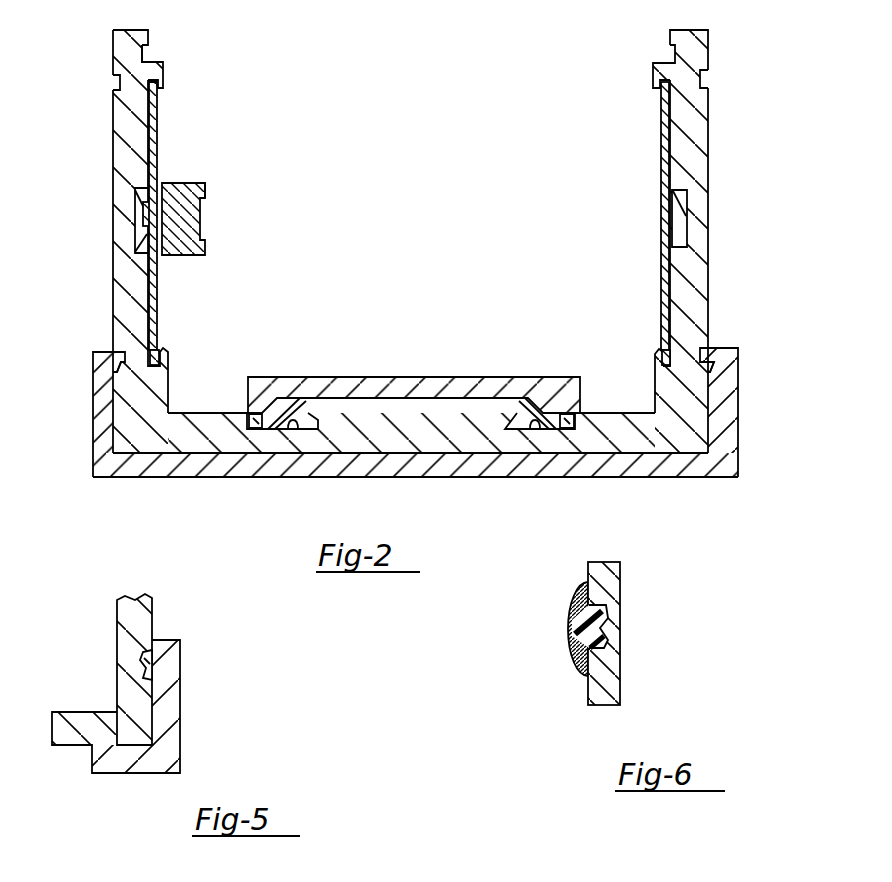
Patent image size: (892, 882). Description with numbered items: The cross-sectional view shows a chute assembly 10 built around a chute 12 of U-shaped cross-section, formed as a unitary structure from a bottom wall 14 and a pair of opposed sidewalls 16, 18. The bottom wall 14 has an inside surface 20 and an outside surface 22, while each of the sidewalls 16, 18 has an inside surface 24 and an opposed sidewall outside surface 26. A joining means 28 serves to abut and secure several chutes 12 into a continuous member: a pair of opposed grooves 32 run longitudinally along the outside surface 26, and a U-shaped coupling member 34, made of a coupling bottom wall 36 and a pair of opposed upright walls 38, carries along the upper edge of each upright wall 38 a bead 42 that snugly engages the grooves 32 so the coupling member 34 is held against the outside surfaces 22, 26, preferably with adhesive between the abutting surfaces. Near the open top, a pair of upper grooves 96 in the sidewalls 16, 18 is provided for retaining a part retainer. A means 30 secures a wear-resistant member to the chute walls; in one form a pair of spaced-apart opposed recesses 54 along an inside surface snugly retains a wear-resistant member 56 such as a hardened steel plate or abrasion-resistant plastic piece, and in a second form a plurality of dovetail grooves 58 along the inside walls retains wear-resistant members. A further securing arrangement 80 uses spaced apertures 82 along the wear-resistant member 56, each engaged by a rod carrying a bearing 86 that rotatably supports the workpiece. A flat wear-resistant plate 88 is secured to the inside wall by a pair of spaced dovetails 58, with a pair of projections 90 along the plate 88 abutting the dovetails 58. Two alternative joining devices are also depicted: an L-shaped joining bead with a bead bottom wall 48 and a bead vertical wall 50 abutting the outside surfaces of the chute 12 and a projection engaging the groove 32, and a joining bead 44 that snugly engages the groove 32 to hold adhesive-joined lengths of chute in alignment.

In FIG. 2, the chute assembly 10 is at (516, 112).
In FIG. 2, the chute 12 is at (730, 330).
In FIG. 5, the chute 12 is at (153, 616).
In FIG. 6, the chute 12 is at (622, 598).
In FIG. 2, the bottom wall 14 is at (598, 411).
In FIG. 2, the sidewall 16 is at (708, 48).
In FIG. 2, the sidewall 18 is at (707, 154).
In FIG. 2, the inside surface 20 is at (373, 405).
In FIG. 2, the outside surface 22 is at (478, 455).
In FIG. 2, the inside surface 24 is at (148, 39).
In FIG. 2, the opposed sidewall outside surface 26 is at (113, 49).
In FIG. 2, the joining means 28 is at (742, 430).
In FIG. 2, the means for securing a wear-resistant member 30 is at (176, 332).
In FIG. 2, the groove 32 is at (118, 356).
In FIG. 5, the groove 32 is at (142, 655).
In FIG. 6, the groove 32 is at (608, 632).
In FIG. 2, the U-shaped coupling member 34 is at (203, 500).
In FIG. 2, the coupling bottom wall 36 is at (680, 478).
In FIG. 2, the upright wall 38 is at (93, 446).
In FIG. 2, the bead 42 is at (113, 323).
In FIG. 6, the joining bead 44 is at (576, 664).
In FIG. 5, the bead bottom wall 48 is at (131, 774).
In FIG. 5, the bead vertical wall 50 is at (181, 738).
In FIG. 2, the recess 54 is at (157, 88).
In FIG. 2, the wear-resistant member 56 is at (158, 145).
In FIG. 2, the dovetail groove 58 is at (136, 206).
In FIG. 2, the additional means for securing a wear-resistant member 80 is at (208, 222).
In FIG. 2, the aperture 82 is at (134, 238).
In FIG. 2, the bearing 86 is at (196, 185).
In FIG. 2, the flat wear-resistant plate 88 is at (470, 380).
In FIG. 2, the projection 90 is at (254, 430).
In FIG. 2, the upper groove 96 is at (706, 80).